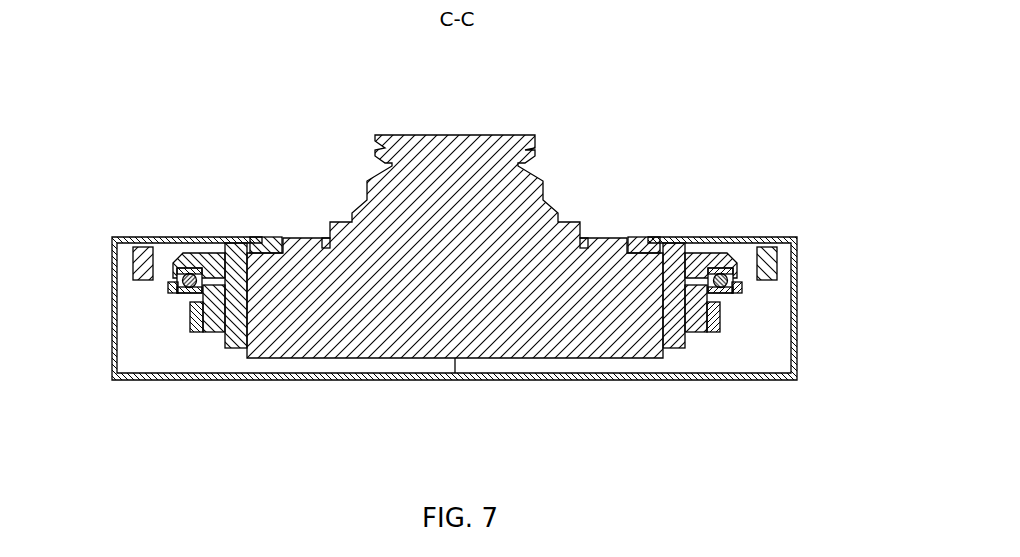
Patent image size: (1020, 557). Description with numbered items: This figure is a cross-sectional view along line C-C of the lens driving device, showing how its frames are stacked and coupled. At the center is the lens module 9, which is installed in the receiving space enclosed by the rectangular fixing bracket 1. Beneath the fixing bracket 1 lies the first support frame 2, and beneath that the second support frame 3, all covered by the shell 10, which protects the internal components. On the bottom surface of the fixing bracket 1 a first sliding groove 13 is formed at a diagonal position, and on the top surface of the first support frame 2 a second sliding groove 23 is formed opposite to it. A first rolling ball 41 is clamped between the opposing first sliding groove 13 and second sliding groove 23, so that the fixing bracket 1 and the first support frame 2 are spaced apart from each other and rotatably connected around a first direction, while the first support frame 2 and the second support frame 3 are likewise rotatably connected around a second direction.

The fixing bracket 1 is at (200, 253).
The first support frame 2 is at (212, 314).
The second support frame 3 is at (163, 255).
The lens module 9 is at (392, 222).
The shell 10 is at (796, 290).
The first sliding groove 13 is at (163, 267).
The second sliding groove 23 is at (163, 302).
The first rolling ball 41 is at (176, 284).